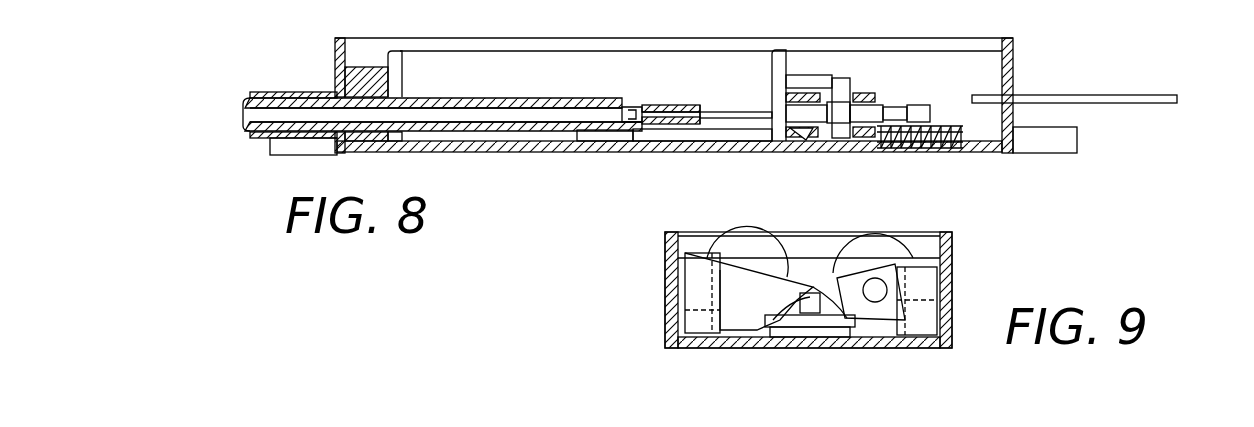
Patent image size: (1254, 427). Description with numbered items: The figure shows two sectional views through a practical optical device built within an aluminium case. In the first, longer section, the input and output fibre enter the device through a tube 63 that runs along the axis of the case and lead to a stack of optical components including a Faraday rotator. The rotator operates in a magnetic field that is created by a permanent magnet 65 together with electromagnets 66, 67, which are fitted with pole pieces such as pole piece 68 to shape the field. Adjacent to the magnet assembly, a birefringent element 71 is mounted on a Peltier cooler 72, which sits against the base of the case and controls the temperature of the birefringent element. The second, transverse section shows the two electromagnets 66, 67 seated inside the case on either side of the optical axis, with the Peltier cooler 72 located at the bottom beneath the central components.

In FIG. 8, the tube 63 is at (250, 138).
In FIG. 8, the permanent magnet 65 is at (839, 77).
In FIG. 9, the electromagnet 66 is at (883, 243).
In FIG. 9, the electromagnet 67 is at (733, 242).
In FIG. 8, the pole piece 68 is at (810, 140).
In FIG. 8, the birefringent element 71 is at (862, 92).
In FIG. 8, the Peltier cooler 72 is at (940, 148).
In FIG. 9, the Peltier cooler 72 is at (815, 347).